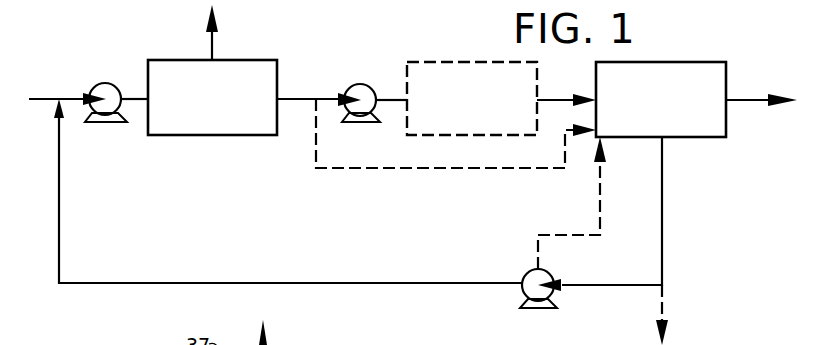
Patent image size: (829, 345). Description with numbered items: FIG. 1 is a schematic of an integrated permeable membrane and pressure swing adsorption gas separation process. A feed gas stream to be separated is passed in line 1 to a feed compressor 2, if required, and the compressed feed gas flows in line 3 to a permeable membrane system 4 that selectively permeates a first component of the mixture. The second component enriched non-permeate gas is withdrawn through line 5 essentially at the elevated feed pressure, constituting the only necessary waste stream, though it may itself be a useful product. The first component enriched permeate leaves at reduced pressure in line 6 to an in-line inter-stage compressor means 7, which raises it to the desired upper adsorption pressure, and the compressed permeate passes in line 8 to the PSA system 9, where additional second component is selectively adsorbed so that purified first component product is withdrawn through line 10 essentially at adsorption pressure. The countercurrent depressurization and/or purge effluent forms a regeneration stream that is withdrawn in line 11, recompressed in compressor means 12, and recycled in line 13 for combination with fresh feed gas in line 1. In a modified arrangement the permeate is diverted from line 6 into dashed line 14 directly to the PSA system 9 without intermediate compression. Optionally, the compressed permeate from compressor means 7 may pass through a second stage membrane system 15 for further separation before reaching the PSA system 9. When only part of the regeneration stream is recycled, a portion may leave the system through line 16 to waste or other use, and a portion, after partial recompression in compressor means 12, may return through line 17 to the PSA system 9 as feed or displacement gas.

The feed gas line 1 is at (46, 97).
The feed compressor 2 is at (108, 83).
The compressed feed gas line 3 is at (135, 98).
The permeable membrane system 4 is at (232, 60).
The non-permeate withdrawal line 5 is at (210, 40).
The permeate gas line 6 is at (287, 99).
The inter-stage compressor means 7 is at (373, 86).
The compressed permeate gas line 8 is at (553, 99).
The PSA system 9 is at (683, 62).
The product gas line 10 is at (753, 99).
The regeneration stream line 11 is at (663, 222).
The recycle compressor means 12 is at (523, 291).
The recycle line 13 is at (113, 283).
The bypass line 14 is at (382, 168).
The second stage membrane system 15 is at (453, 62).
The waste line 16 is at (663, 298).
The recycle line to PSA system 17 is at (599, 172).